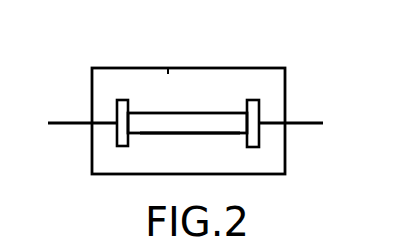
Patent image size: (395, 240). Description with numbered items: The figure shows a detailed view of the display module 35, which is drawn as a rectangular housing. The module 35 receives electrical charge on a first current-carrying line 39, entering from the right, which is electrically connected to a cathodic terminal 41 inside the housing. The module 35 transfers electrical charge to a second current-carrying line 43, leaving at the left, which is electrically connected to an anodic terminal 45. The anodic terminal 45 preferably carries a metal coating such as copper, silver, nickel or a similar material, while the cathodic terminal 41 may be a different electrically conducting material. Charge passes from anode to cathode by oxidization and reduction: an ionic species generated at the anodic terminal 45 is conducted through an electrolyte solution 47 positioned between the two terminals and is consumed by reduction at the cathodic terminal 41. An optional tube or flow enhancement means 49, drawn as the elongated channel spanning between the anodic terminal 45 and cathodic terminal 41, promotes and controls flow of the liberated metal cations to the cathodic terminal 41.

The display module 35 is at (168, 68).
The first current-carrying line 39 is at (316, 121).
The cathodic terminal 41 is at (258, 107).
The second current-carrying line 43 is at (75, 124).
The anodic terminal 45 is at (117, 136).
The electrolyte solution 47 is at (213, 112).
The tube or flow enhancement means 49 is at (157, 135).